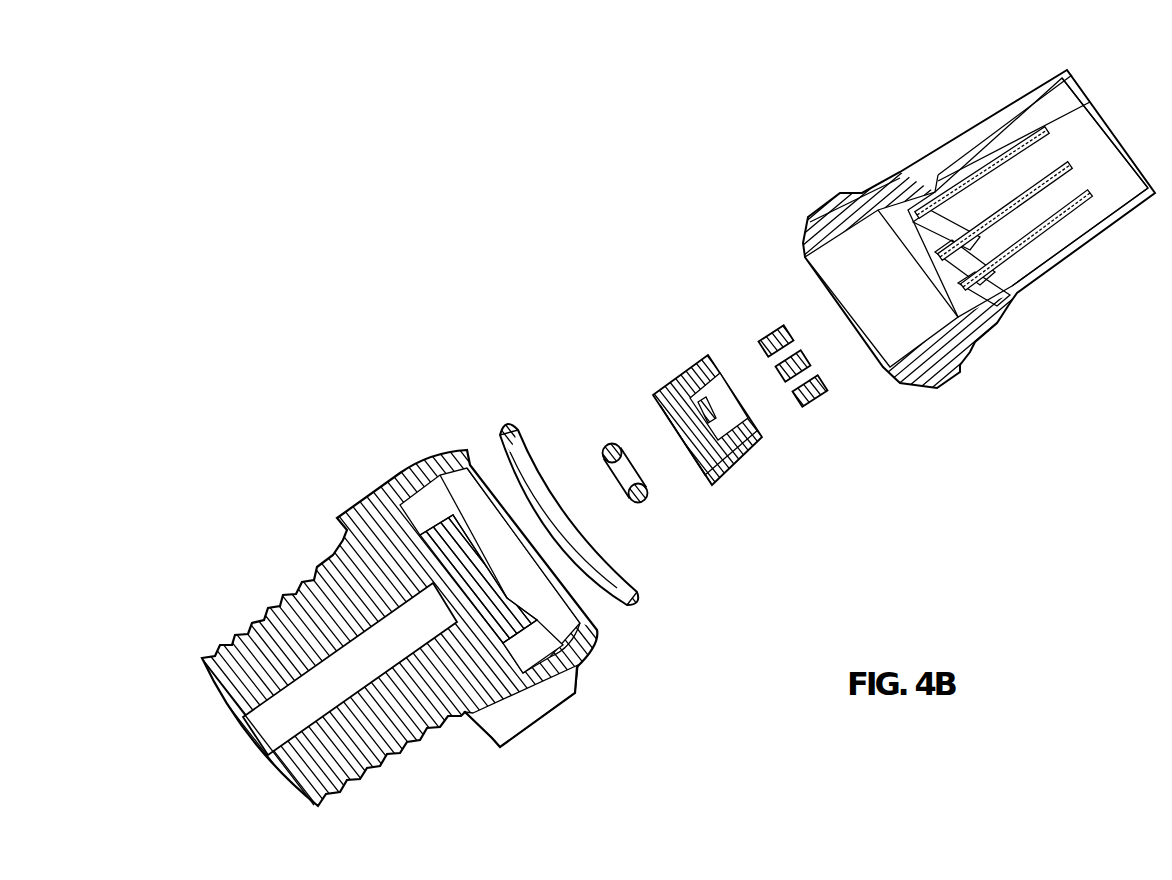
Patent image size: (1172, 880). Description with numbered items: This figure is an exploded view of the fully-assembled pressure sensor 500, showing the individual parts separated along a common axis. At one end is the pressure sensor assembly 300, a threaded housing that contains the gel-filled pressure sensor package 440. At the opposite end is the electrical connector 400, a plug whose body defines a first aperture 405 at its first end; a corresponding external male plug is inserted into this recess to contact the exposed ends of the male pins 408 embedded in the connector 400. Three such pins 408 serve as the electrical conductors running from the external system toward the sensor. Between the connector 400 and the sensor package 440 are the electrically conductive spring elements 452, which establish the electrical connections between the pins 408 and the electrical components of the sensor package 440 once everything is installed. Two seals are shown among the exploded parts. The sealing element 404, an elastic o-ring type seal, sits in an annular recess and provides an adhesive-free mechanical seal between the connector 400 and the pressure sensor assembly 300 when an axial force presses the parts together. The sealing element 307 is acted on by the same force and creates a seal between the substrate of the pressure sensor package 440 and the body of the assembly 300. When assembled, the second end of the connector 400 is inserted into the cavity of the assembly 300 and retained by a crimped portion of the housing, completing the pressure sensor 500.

The pressure sensor 500 is at (422, 235).
The pressure sensor assembly 300 is at (437, 762).
The sealing element 307 is at (607, 448).
The sealing element 404 is at (627, 602).
The pressure sensor package 440 is at (748, 480).
The electrically conductive spring elements 452 is at (802, 423).
The electrical connector 400 is at (756, 407).
The first aperture 405 is at (1095, 140).
The male pins 408 is at (1050, 223).